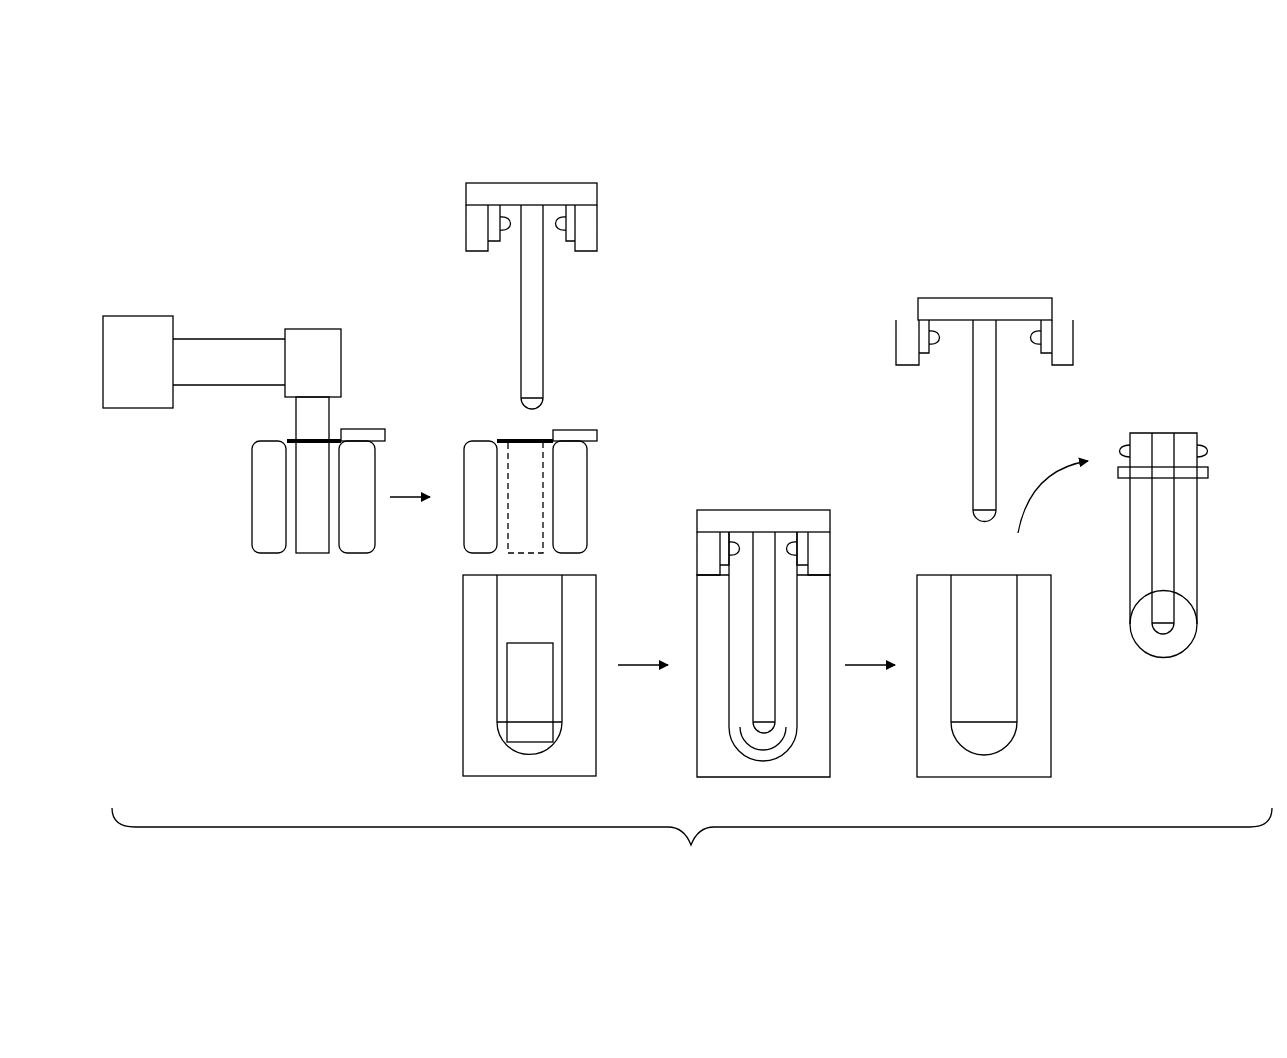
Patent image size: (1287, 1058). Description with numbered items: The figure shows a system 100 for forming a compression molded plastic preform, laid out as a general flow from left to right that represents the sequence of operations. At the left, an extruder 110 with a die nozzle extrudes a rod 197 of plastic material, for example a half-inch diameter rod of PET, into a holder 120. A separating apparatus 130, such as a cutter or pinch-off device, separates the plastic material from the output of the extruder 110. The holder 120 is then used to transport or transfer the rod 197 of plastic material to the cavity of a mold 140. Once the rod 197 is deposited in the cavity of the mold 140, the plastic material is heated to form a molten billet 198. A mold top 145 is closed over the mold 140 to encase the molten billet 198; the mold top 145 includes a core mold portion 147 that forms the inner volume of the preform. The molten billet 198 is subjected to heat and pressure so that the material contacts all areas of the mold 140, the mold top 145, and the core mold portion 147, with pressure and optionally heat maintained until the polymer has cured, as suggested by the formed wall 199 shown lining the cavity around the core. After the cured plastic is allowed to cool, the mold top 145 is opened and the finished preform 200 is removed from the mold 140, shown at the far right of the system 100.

The system 100 is at (919, 156).
The extruder 110 is at (224, 339).
The holder 120 is at (252, 508).
The separating apparatus 130 is at (363, 429).
The mold 140 is at (597, 605).
The mold top 145 is at (600, 197).
The core mold portion 147 is at (543, 327).
The rod 197 is at (312, 553).
The molten billet 198 is at (507, 688).
The formed tube wall 199 is at (782, 733).
The preform 200 is at (1197, 513).